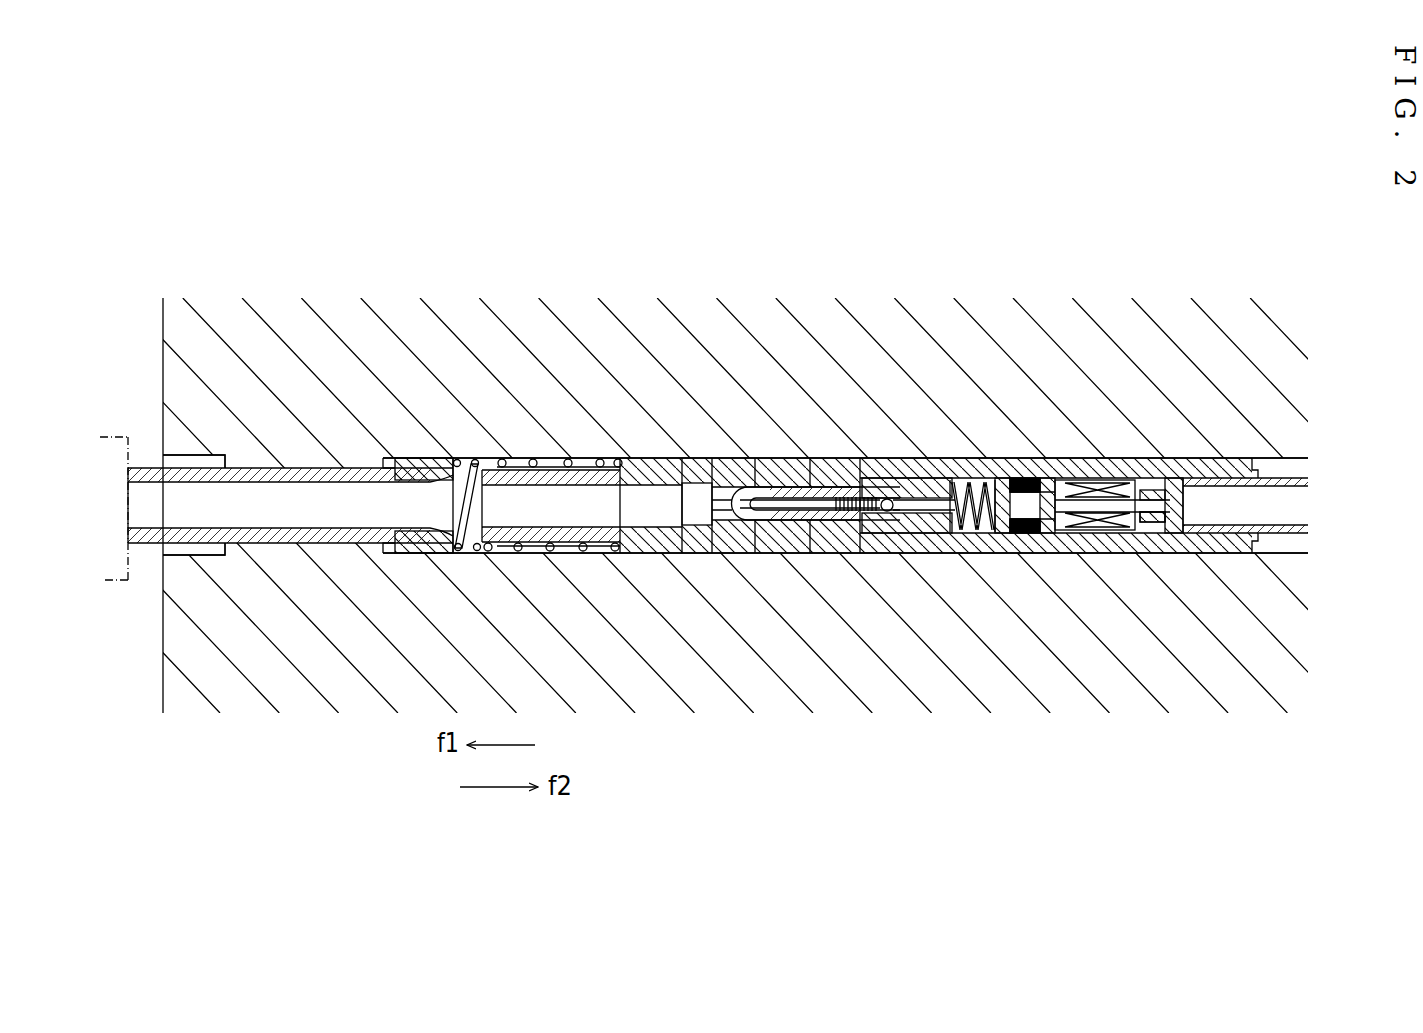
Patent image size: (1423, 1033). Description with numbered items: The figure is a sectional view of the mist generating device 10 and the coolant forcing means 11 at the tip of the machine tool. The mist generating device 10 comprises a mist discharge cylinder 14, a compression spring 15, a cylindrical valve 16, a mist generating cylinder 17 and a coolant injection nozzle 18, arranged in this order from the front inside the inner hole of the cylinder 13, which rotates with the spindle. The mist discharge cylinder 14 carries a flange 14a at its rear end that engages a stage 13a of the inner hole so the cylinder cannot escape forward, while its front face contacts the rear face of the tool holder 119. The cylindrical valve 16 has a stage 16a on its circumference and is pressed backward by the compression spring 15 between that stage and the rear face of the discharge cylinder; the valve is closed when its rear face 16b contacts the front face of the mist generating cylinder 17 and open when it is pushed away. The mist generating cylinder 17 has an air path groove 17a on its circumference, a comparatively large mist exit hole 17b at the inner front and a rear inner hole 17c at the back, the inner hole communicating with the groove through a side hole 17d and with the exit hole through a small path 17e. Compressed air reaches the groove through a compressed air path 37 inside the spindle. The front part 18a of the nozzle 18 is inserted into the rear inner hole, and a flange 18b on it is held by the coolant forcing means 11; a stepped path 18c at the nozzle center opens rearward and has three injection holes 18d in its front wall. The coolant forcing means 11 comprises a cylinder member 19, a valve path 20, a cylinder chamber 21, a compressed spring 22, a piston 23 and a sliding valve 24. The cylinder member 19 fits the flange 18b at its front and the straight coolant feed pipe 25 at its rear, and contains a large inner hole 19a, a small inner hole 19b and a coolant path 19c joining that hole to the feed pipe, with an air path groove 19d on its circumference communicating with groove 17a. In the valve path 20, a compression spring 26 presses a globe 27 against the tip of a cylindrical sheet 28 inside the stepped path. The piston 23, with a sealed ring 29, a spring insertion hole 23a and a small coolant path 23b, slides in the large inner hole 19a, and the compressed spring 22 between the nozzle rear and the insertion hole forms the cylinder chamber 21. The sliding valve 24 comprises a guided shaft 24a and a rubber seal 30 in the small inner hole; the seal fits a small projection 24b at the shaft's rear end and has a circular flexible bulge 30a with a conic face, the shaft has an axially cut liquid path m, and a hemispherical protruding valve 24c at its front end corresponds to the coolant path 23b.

The mist generating device 10 is at (636, 428).
The coolant forcing means 11 is at (987, 580).
The cylinder 13 is at (322, 330).
The stage 13a is at (373, 553).
The mist discharge cylinder 14 is at (305, 543).
The flange 14a is at (430, 458).
The compression spring 15 is at (472, 462).
The cylindrical valve 16 is at (567, 553).
The stage 16a is at (600, 460).
The rear face 16b is at (690, 458).
The mist generating cylinder 17 is at (790, 458).
The air path groove 17a is at (812, 556).
The mist exit hole 17b is at (702, 556).
The rear inner hole 17c is at (752, 458).
The side hole 17d is at (765, 540).
The path 17e is at (723, 458).
The coolant injection nozzle 18 is at (900, 556).
The front part 18a is at (808, 458).
The flange 18b is at (907, 458).
The stepped path 18c is at (828, 458).
The injection holes 18d is at (742, 556).
The cylinder member 19 is at (1038, 458).
The inner hole 19a is at (928, 458).
The inner hole 19b is at (1047, 556).
The coolant path 19c is at (1173, 458).
The air path groove 19d is at (1203, 556).
The valve path 20 is at (917, 556).
The cylinder chamber 21 is at (940, 556).
The compressed spring 22 is at (967, 470).
The piston 23 is at (1003, 458).
The spring insertion hole 23a is at (997, 556).
The coolant path 23b is at (1063, 556).
The sliding valve 24 is at (1095, 458).
The guided shaft 24a is at (1070, 556).
The projection 24b is at (1145, 556).
The hemispherical protruding valve 24c is at (1070, 458).
The coolant feed pipe 25 is at (1277, 553).
The compression spring 26 is at (848, 556).
The globe 27 is at (880, 458).
The cylindrical sheet 28 is at (943, 458).
The sealed ring 29 is at (1020, 458).
The rubber seal 30 is at (1142, 458).
The circular flexible bulge 30a is at (1157, 556).
The compressed air path 37 is at (1265, 458).
The tool holder 119 is at (115, 437).
The liquid path m is at (1150, 557).